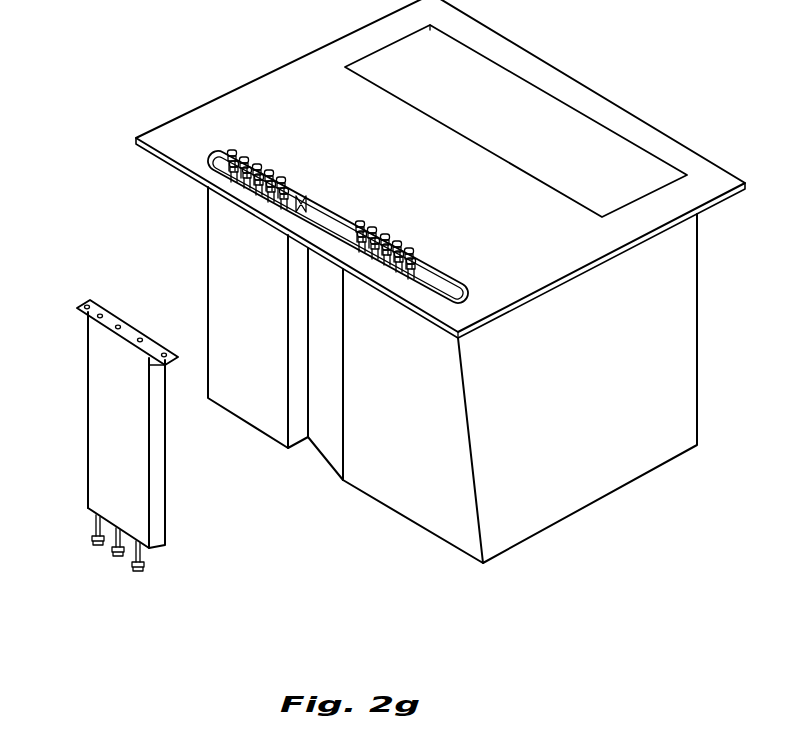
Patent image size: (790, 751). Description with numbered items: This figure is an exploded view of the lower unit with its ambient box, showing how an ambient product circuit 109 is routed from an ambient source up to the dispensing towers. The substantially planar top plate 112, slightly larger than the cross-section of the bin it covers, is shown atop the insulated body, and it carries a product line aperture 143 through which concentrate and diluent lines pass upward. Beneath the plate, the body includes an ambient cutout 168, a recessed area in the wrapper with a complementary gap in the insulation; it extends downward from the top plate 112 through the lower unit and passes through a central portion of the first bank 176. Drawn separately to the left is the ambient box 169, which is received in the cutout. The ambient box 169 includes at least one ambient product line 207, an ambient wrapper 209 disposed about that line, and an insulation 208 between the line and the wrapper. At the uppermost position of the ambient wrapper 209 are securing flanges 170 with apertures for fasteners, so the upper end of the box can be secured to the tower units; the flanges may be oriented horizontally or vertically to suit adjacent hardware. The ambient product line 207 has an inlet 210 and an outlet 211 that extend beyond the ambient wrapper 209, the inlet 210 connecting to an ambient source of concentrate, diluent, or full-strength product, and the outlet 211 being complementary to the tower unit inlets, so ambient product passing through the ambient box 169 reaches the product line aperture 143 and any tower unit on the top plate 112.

The ambient product circuit 109 is at (612, 532).
The top plate 112 is at (315, 97).
The product line aperture 143 is at (302, 195).
The ambient cutout 168 is at (315, 452).
The ambient box 169 is at (100, 435).
The securing flanges 170 is at (77, 308).
The first bank 176 is at (212, 148).
The ambient product line 207 is at (95, 523).
The insulation 208 is at (152, 552).
The ambient wrapper 209 is at (158, 492).
The inlet 210 is at (98, 548).
The outlet 211 is at (105, 312).